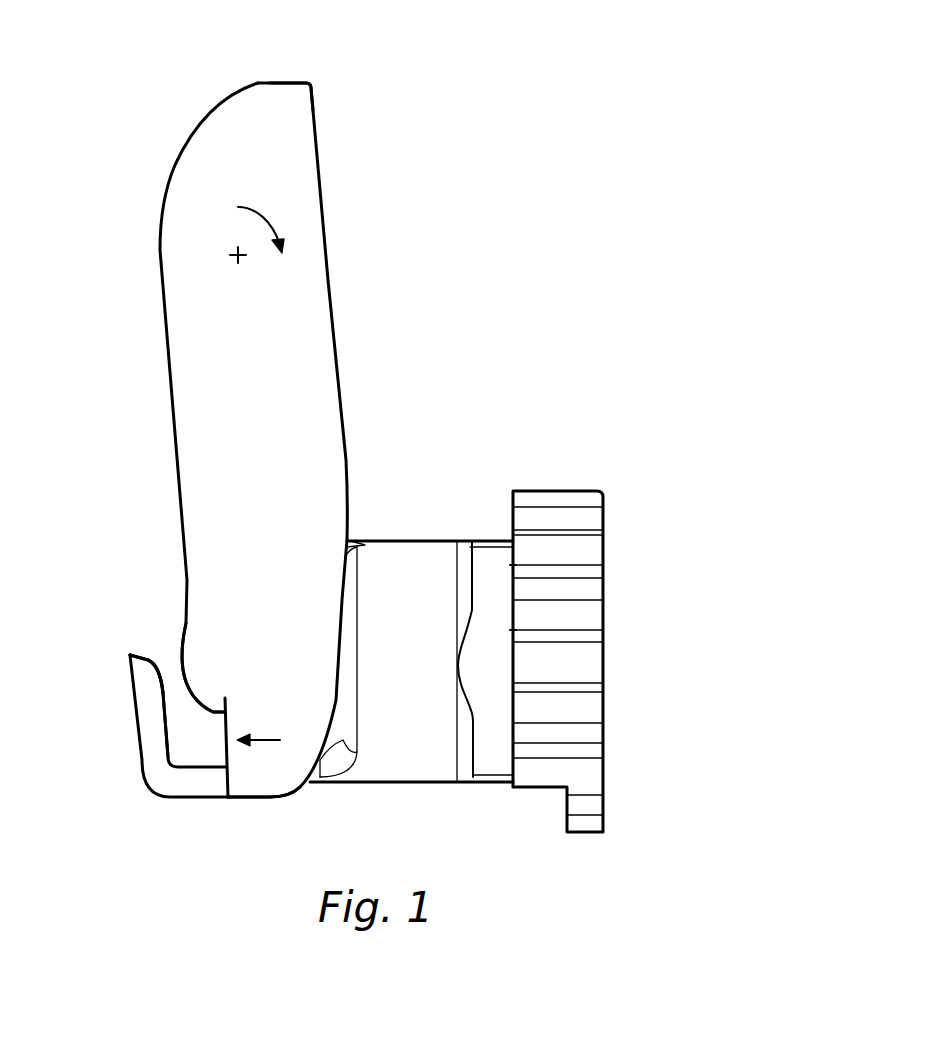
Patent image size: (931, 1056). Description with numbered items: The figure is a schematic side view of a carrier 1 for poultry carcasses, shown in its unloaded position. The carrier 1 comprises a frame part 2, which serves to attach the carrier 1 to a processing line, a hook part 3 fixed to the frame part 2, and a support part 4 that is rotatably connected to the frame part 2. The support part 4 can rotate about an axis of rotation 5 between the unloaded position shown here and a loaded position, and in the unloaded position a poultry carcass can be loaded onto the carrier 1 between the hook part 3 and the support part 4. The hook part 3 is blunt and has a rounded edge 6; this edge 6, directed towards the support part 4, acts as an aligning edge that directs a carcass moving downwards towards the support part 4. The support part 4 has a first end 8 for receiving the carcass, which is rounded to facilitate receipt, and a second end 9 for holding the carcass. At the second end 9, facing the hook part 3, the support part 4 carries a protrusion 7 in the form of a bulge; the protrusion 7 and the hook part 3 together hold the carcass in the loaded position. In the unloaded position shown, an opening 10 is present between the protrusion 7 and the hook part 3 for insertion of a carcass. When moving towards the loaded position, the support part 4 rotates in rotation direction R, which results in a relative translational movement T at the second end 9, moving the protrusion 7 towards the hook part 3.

The carrier 1 is at (487, 144).
The frame part 2 is at (413, 555).
The hook part 3 is at (160, 777).
The support part 4 is at (300, 160).
The axis of rotation 5 is at (234, 253).
The rounded edge 6 is at (142, 653).
The protrusion 7 is at (183, 653).
The first end 8 is at (296, 83).
The second end 9 is at (262, 797).
The opening 10 is at (165, 658).
The rotation direction R is at (264, 223).
The translational movement T is at (268, 740).